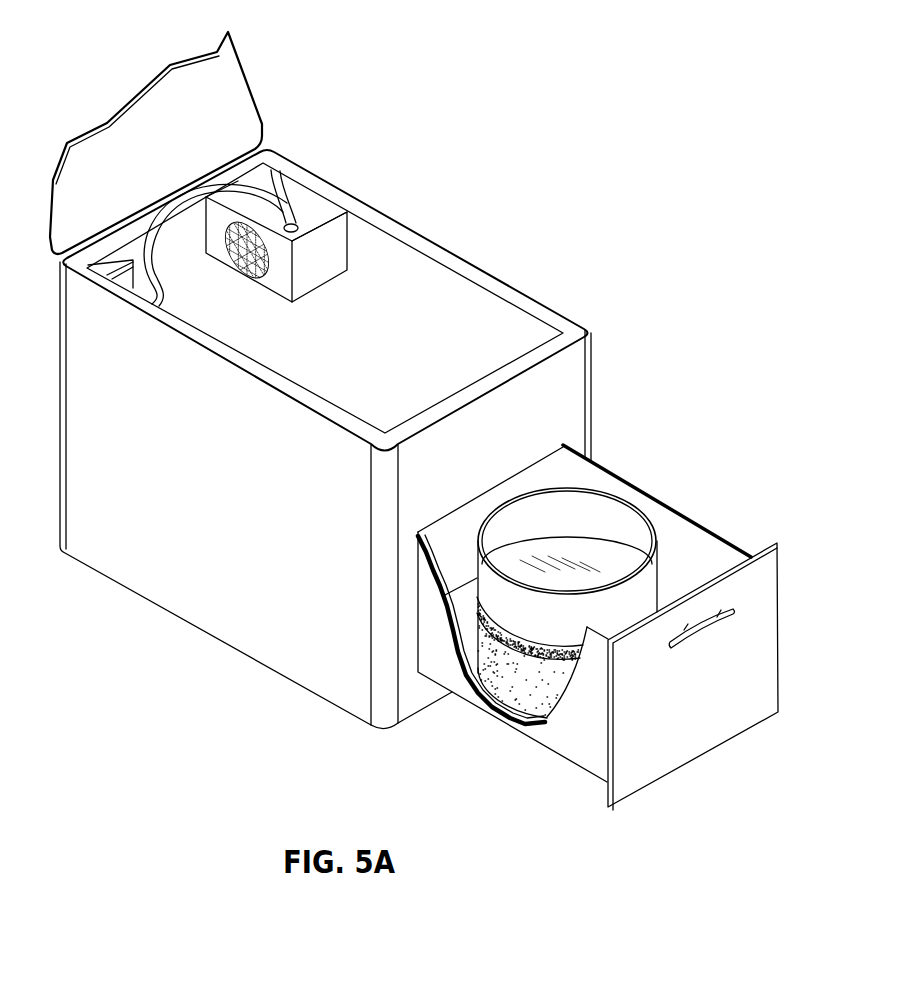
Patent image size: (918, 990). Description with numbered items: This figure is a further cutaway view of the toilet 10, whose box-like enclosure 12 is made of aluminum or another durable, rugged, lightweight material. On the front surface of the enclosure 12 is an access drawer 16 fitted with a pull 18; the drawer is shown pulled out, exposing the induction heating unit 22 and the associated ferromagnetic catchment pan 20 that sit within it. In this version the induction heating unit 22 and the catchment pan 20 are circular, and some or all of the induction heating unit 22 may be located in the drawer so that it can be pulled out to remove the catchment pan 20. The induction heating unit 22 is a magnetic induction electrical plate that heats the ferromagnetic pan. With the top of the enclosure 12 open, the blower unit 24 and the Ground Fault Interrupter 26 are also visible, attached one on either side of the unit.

The toilet 10 is at (470, 149).
The enclosure 12 is at (232, 630).
The access drawer 16 is at (700, 729).
The pull 18 is at (712, 630).
The catchment pan 20 is at (583, 512).
The induction heating unit 22 is at (523, 678).
The blower unit 24 is at (312, 207).
The Ground Fault Interrupter 26 is at (121, 284).